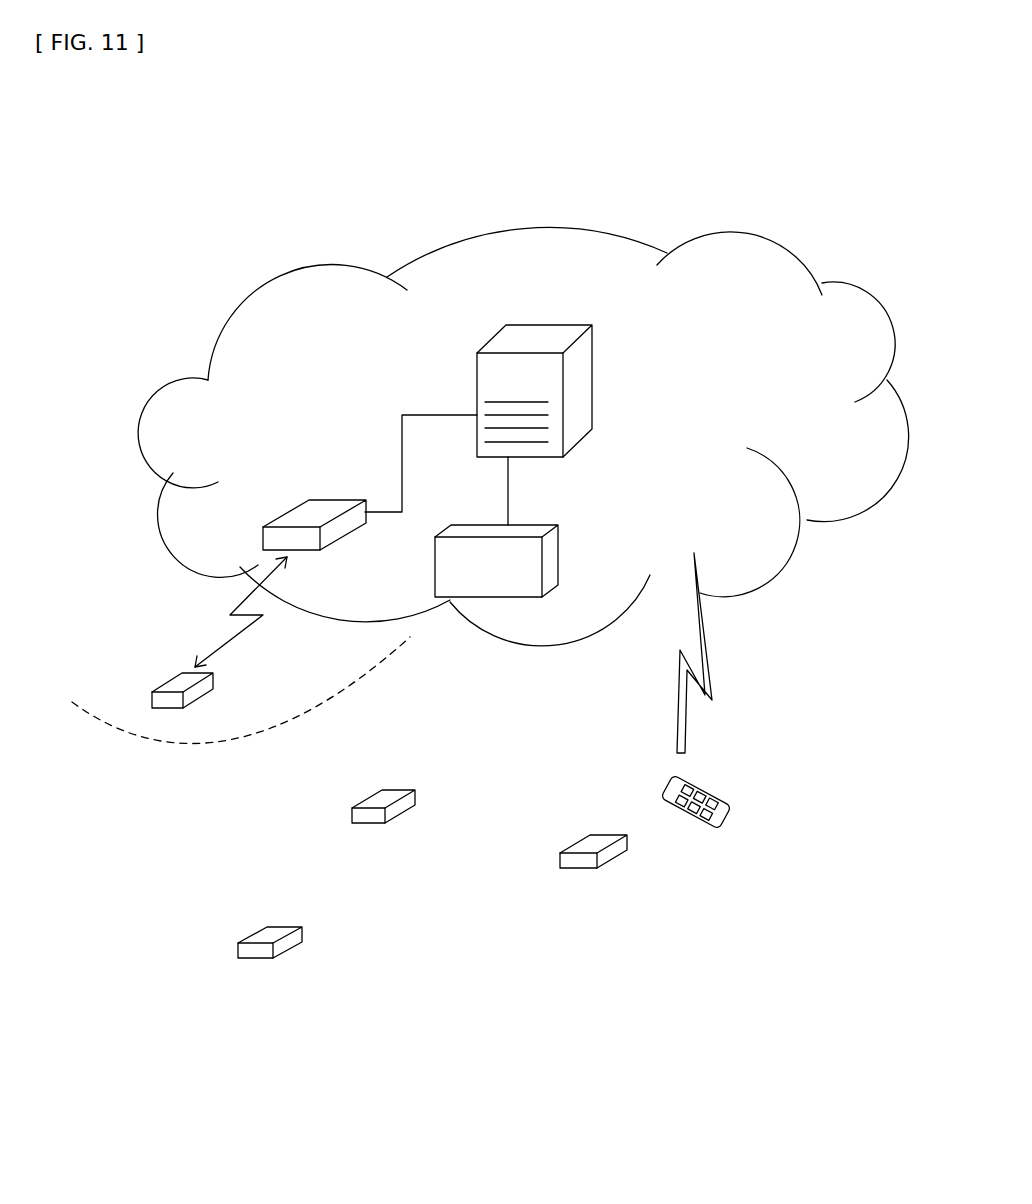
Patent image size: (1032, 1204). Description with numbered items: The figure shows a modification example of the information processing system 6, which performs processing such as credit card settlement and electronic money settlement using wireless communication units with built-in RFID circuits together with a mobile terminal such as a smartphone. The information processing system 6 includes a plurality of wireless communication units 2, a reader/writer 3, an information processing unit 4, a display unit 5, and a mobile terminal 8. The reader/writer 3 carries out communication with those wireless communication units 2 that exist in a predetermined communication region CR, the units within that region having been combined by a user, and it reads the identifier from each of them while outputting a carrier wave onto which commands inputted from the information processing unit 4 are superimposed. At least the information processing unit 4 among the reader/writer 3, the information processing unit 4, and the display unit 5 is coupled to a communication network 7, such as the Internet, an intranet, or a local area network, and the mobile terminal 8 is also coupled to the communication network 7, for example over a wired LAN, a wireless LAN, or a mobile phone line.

The wireless communication unit 2 is at (167, 698).
The reader/writer 3 is at (310, 497).
The information processing unit 4 is at (537, 333).
The display unit 5 is at (548, 567).
The information processing system 6 is at (710, 213).
The communication network 7 is at (310, 263).
The mobile terminal 8 is at (730, 810).
The communication region CR is at (382, 687).